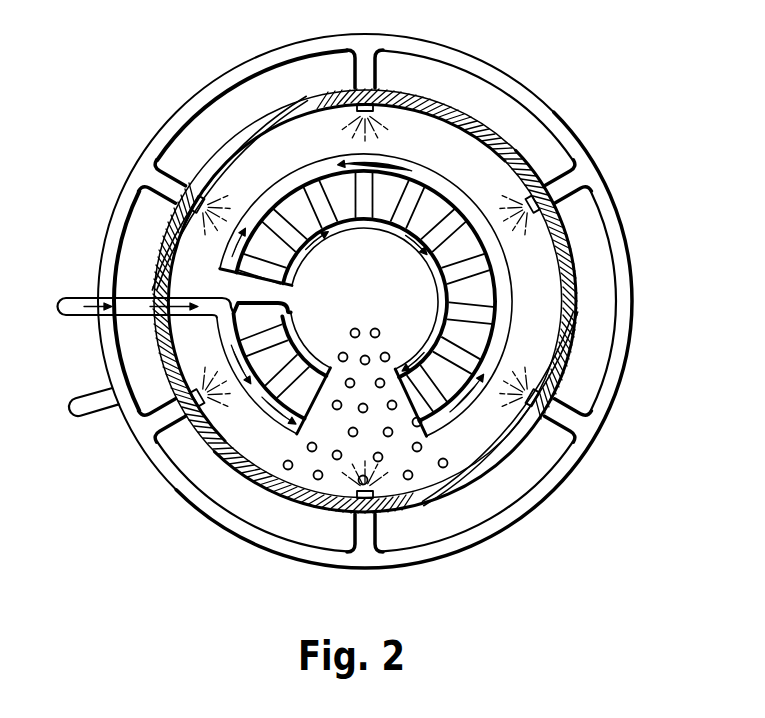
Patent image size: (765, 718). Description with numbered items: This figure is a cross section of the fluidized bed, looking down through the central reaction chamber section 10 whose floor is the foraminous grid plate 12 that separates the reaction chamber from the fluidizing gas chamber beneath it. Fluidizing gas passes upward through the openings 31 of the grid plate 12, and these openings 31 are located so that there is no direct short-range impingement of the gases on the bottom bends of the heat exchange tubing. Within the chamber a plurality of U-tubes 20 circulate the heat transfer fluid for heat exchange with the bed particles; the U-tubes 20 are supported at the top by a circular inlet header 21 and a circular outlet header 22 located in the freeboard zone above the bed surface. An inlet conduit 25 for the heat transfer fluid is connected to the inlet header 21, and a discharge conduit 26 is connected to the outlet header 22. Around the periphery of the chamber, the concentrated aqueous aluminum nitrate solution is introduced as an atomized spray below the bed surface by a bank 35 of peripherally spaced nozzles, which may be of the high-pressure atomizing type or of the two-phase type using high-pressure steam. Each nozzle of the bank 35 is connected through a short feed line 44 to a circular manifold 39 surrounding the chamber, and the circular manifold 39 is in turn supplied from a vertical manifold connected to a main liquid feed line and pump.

The central reaction chamber section 10 is at (563, 392).
The foraminous grid plate 12 is at (547, 328).
The U-tubes 20 is at (408, 316).
The circular inlet header 21 is at (503, 273).
The circular outlet header 22 is at (450, 187).
The inlet conduit 25 is at (90, 303).
The discharge conduit 26 is at (227, 335).
The openings of the grid plate 31 is at (447, 467).
The bank of peripherally spaced nozzles 35 is at (433, 97).
The circular manifold 39 is at (178, 118).
The short feed line 44 is at (370, 75).